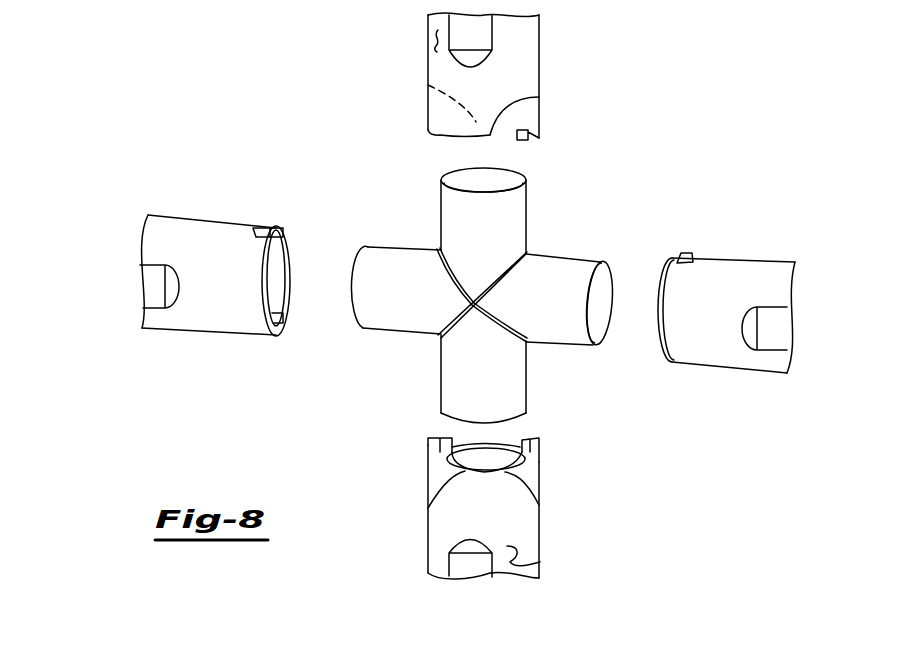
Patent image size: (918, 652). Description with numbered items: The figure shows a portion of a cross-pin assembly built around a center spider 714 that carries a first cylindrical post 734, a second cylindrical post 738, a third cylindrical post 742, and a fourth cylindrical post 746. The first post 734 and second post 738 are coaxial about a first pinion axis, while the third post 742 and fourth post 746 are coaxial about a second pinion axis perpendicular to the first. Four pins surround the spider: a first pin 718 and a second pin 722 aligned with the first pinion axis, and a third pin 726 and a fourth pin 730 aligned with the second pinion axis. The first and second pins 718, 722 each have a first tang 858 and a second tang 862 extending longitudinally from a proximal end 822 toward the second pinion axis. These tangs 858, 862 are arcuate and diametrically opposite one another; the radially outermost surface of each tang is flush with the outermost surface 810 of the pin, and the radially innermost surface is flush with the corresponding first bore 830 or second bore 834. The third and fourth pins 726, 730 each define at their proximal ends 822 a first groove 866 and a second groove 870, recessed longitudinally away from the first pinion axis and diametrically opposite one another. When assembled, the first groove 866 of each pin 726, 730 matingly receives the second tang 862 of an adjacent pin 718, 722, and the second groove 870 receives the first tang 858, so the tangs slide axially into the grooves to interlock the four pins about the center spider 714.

The center spider 714 is at (467, 303).
The first pin 718 is at (540, 42).
The second pin 722 is at (430, 515).
The third pin 726 is at (383, 277).
The fourth pin 730 is at (764, 274).
The first cylindrical post 734 is at (490, 211).
The second cylindrical post 738 is at (467, 392).
The third cylindrical post 742 is at (388, 247).
The fourth cylindrical post 746 is at (563, 330).
The outermost surface 810 is at (427, 42).
The proximal end 822 is at (540, 97).
The first bore 830 is at (428, 85).
The second bore 834 is at (468, 462).
The first tang 858 is at (430, 134).
The second tang 862 is at (525, 139).
The first groove 866 is at (279, 323).
The second groove 870 is at (255, 230).